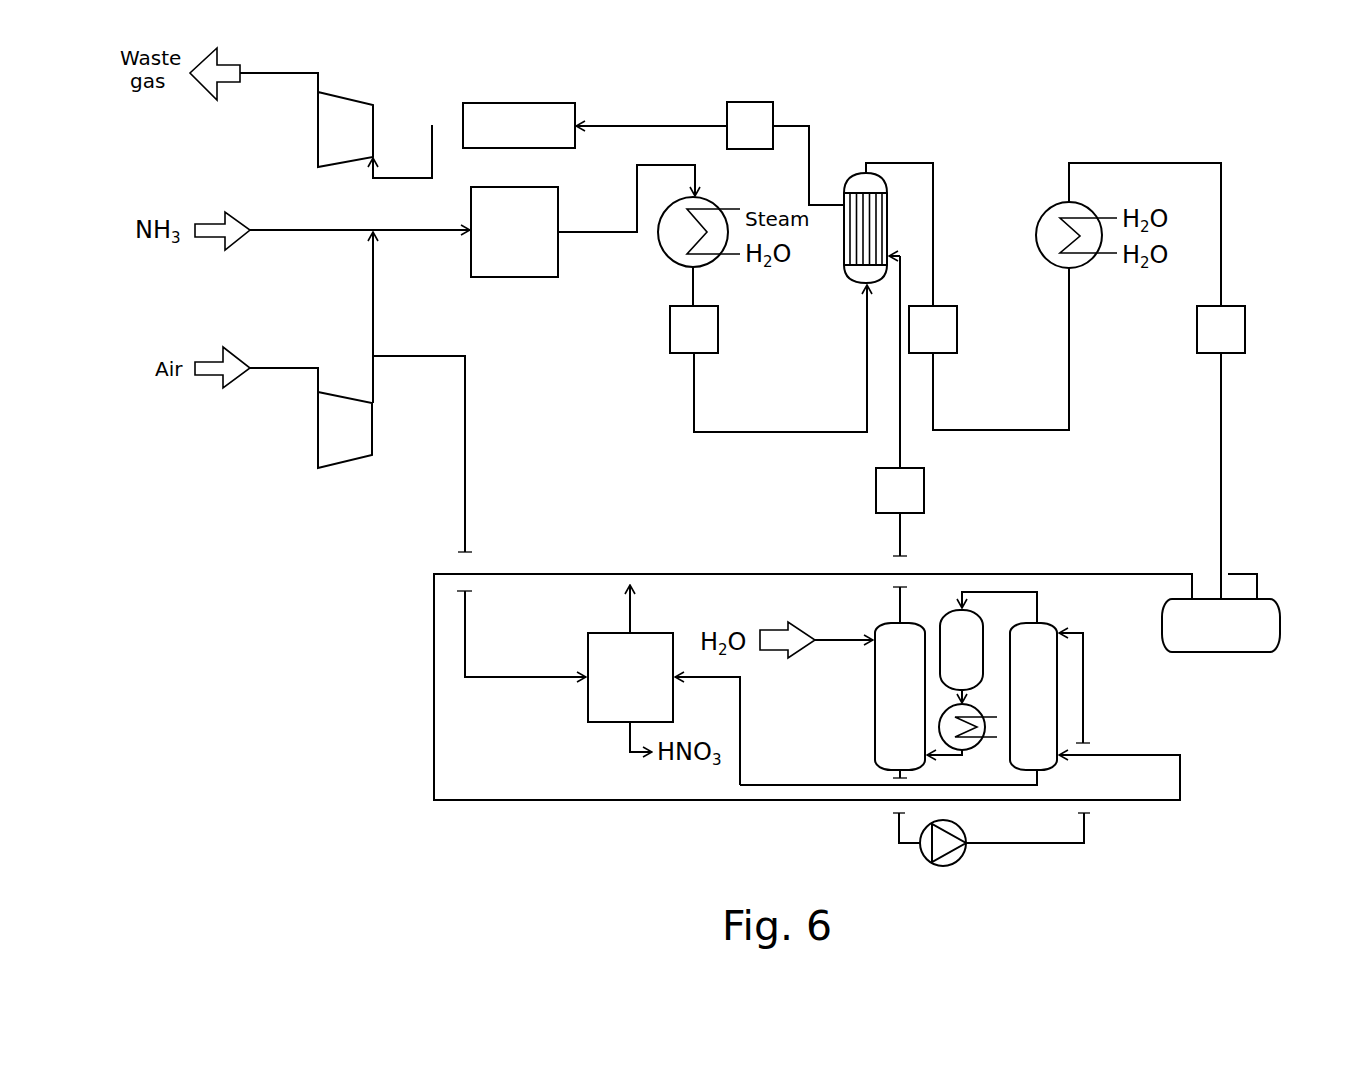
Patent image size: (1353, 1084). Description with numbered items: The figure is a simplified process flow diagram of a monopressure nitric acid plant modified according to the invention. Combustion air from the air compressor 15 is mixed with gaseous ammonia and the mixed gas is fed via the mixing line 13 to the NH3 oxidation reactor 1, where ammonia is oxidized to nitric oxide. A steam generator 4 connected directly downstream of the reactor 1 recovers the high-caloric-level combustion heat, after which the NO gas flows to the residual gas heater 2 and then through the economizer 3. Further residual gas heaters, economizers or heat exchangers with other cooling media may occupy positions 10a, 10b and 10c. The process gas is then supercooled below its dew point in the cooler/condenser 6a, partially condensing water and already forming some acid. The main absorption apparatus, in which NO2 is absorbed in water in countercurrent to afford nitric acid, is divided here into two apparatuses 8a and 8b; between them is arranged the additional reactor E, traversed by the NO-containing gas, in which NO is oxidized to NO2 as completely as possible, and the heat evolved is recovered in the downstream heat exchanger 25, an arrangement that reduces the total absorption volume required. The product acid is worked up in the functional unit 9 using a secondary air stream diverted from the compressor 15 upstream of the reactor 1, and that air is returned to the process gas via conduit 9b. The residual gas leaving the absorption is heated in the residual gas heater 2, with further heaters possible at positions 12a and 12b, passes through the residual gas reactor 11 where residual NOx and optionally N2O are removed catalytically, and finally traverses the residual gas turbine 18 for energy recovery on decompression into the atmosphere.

The NH3 oxidation reactor 1 is at (583, 221).
The residual gas heater 2 is at (873, 234).
The economizer 3 is at (1109, 234).
The steam generator 4 is at (699, 251).
The cooler/condenser 6a is at (1221, 625).
The absorption apparatus 8a is at (1049, 696).
The absorption apparatus 8b is at (888, 686).
The functional unit 9 is at (598, 688).
The conduit 9b is at (661, 606).
The heat exchanger position 10a is at (768, 358).
The heat exchanger position 10b is at (989, 349).
The heat exchanger position 10c is at (1221, 452).
The residual gas reactor 11 is at (519, 125).
The residual gas heat exchanger position 12a is at (900, 406).
The residual gas heat exchanger position 12b is at (710, 153).
The compressed air line 13 is at (400, 317).
The air compressor 15 is at (361, 454).
The residual gas turbine 18 is at (336, 125).
The heat exchanger 25 is at (967, 735).
The additional reactor E is at (988, 641).